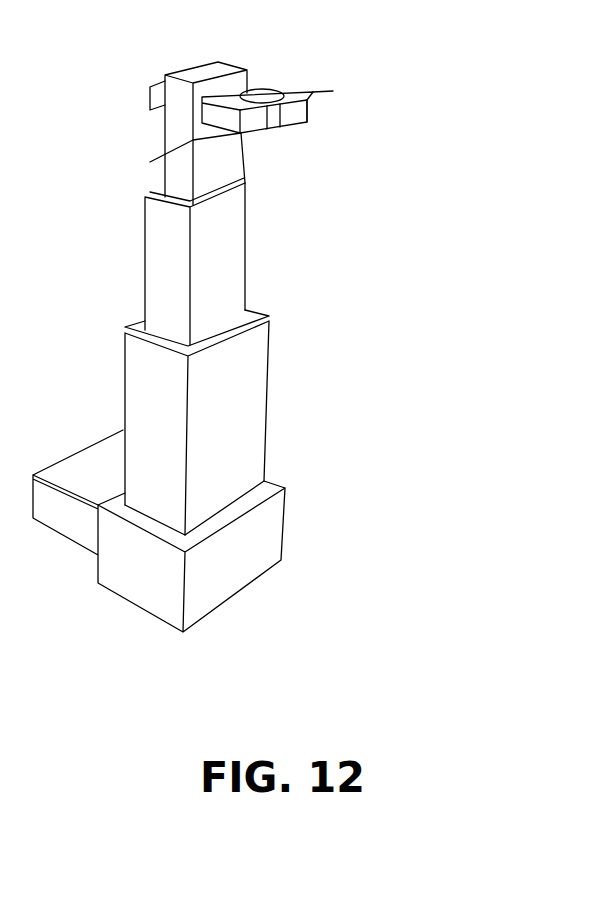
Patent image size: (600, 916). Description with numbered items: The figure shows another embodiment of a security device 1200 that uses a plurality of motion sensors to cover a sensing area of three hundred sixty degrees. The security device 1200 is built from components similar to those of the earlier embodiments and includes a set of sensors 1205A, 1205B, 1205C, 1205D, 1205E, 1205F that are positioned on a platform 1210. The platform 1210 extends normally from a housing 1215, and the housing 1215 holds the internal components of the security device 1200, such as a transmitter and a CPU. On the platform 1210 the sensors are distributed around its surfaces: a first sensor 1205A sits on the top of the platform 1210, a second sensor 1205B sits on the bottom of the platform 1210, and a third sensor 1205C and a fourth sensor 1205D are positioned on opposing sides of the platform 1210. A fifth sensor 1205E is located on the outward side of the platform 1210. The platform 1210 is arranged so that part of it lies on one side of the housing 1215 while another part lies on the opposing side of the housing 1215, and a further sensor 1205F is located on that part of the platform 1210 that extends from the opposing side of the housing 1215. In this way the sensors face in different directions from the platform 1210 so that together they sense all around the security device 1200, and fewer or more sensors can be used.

The security device 1200 is at (269, 320).
The first sensor 1205A is at (262, 92).
The second sensor 1205B is at (275, 135).
The third sensor 1205C is at (150, 162).
The fourth sensor 1205D is at (328, 91).
The fifth sensor 1205E is at (308, 108).
The sensor 1205F is at (150, 96).
The platform 1210 is at (240, 90).
The housing 1215 is at (135, 200).